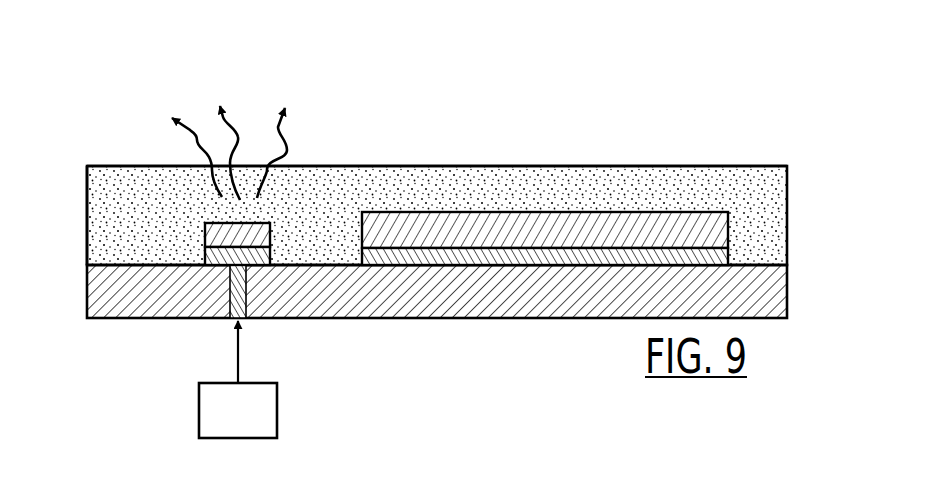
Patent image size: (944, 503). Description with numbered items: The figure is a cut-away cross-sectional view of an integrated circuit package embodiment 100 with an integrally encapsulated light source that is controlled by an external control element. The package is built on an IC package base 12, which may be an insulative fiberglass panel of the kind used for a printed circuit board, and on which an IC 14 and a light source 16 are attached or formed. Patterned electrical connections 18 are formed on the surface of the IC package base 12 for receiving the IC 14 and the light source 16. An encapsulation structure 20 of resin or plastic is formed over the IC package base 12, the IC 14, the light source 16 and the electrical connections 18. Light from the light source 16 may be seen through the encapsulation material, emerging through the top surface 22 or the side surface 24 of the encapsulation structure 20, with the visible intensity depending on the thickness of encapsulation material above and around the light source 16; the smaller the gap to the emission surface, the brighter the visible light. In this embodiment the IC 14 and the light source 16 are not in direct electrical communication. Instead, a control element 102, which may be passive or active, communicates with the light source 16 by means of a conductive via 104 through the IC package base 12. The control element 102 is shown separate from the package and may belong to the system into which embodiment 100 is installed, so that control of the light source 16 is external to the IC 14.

The embodiment 100 is at (122, 53).
The IC package base 12 is at (787, 288).
The IC 14 is at (728, 237).
The light source 16 is at (205, 238).
The electrical connections 18 is at (415, 265).
The encapsulation structure 20 is at (787, 192).
The top surface 22 is at (700, 167).
The side surface 24 is at (87, 240).
The control element 102 is at (199, 408).
The conductive via 104 is at (228, 292).